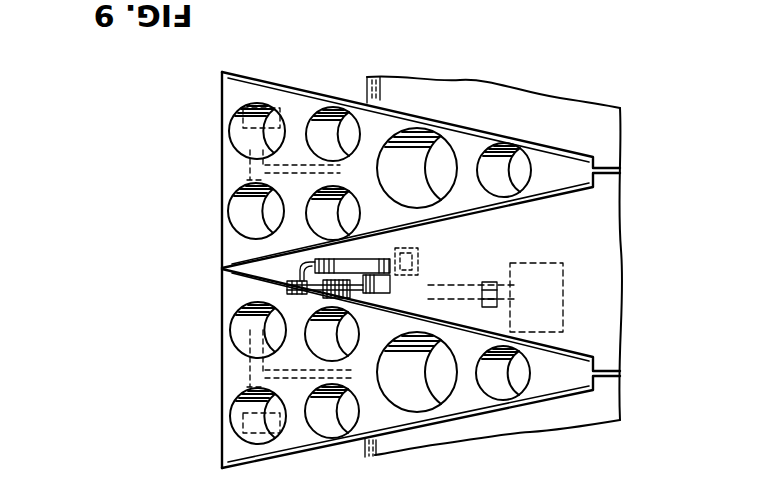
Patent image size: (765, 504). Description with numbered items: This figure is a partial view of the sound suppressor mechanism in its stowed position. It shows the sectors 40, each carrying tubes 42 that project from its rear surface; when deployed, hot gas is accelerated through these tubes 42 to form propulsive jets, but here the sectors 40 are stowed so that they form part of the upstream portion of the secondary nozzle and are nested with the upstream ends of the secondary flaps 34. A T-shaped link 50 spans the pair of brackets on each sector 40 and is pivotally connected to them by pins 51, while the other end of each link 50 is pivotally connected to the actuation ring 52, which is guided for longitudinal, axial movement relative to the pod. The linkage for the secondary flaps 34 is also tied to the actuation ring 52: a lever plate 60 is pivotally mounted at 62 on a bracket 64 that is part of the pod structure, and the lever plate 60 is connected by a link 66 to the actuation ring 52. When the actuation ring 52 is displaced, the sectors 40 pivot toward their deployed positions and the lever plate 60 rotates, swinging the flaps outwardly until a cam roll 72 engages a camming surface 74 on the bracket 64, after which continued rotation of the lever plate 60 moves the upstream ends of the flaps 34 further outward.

The secondary flap 34 is at (612, 304).
The sector 40 is at (301, 452).
The tube 42 is at (402, 403).
The T-shaped link 50 is at (308, 371).
The pin 51 is at (229, 414).
The actuation ring 52 is at (568, 265).
The lever plate 60 is at (318, 292).
The pivotal mounting 62 is at (298, 279).
The bracket 64 is at (298, 242).
The link 66 is at (350, 300).
The cam roll 72 is at (417, 258).
The camming surface 74 is at (336, 258).